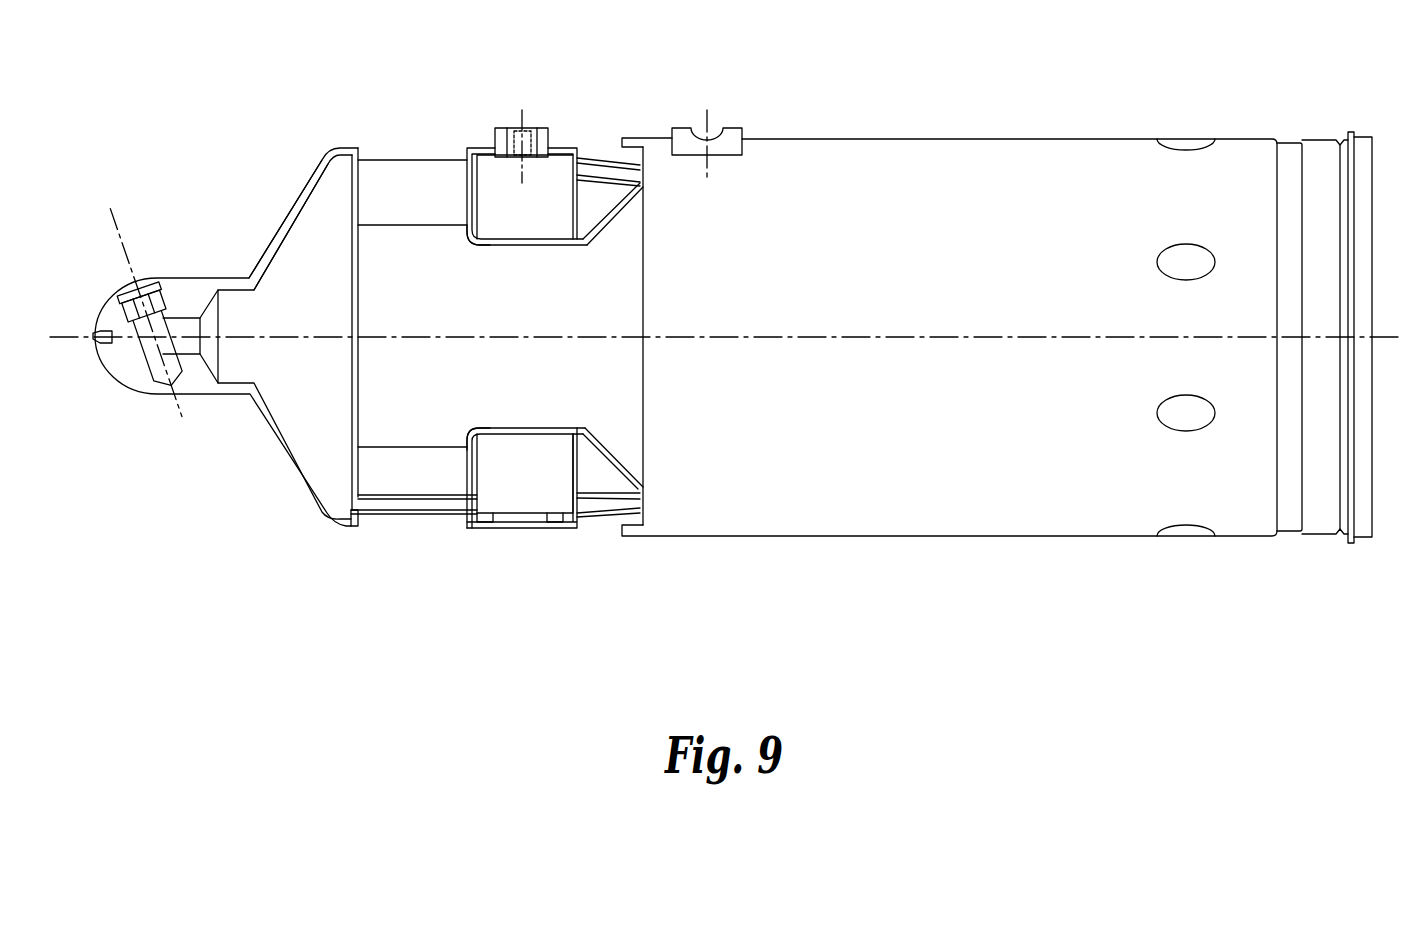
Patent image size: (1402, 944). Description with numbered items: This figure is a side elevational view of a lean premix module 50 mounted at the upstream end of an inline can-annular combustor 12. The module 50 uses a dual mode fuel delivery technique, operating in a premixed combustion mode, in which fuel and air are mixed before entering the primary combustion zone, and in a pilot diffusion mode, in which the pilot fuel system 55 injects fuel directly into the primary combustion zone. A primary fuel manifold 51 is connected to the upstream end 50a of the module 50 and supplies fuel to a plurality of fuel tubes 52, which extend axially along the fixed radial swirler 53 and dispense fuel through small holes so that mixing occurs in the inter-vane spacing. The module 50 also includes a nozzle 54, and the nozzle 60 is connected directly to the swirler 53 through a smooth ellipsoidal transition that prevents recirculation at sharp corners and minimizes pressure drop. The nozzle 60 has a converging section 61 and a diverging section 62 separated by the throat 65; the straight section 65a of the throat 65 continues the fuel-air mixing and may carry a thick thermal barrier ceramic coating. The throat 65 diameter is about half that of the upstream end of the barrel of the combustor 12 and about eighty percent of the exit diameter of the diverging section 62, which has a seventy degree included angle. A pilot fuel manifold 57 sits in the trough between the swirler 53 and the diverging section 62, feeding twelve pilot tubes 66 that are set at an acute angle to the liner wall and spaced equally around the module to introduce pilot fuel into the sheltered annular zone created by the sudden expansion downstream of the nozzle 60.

The inline can-annular combustor 12 is at (1023, 97).
The lean premix module 50 is at (388, 153).
The upstream end of the premix module 50a is at (353, 525).
The primary fuel manifold 51 is at (293, 256).
The fuel tubes 52 is at (397, 503).
The radial swirler 53 is at (428, 178).
The nozzle 54 is at (478, 428).
The pilot fuel system 55 is at (597, 176).
The pilot fuel manifold 57 is at (552, 127).
The nozzle 60 is at (506, 452).
The converging section 61 is at (468, 438).
The diverging section 62 is at (625, 463).
The throat 65 is at (520, 221).
The straight section of the throat 65a is at (486, 248).
The pilot tubes 66 is at (642, 500).